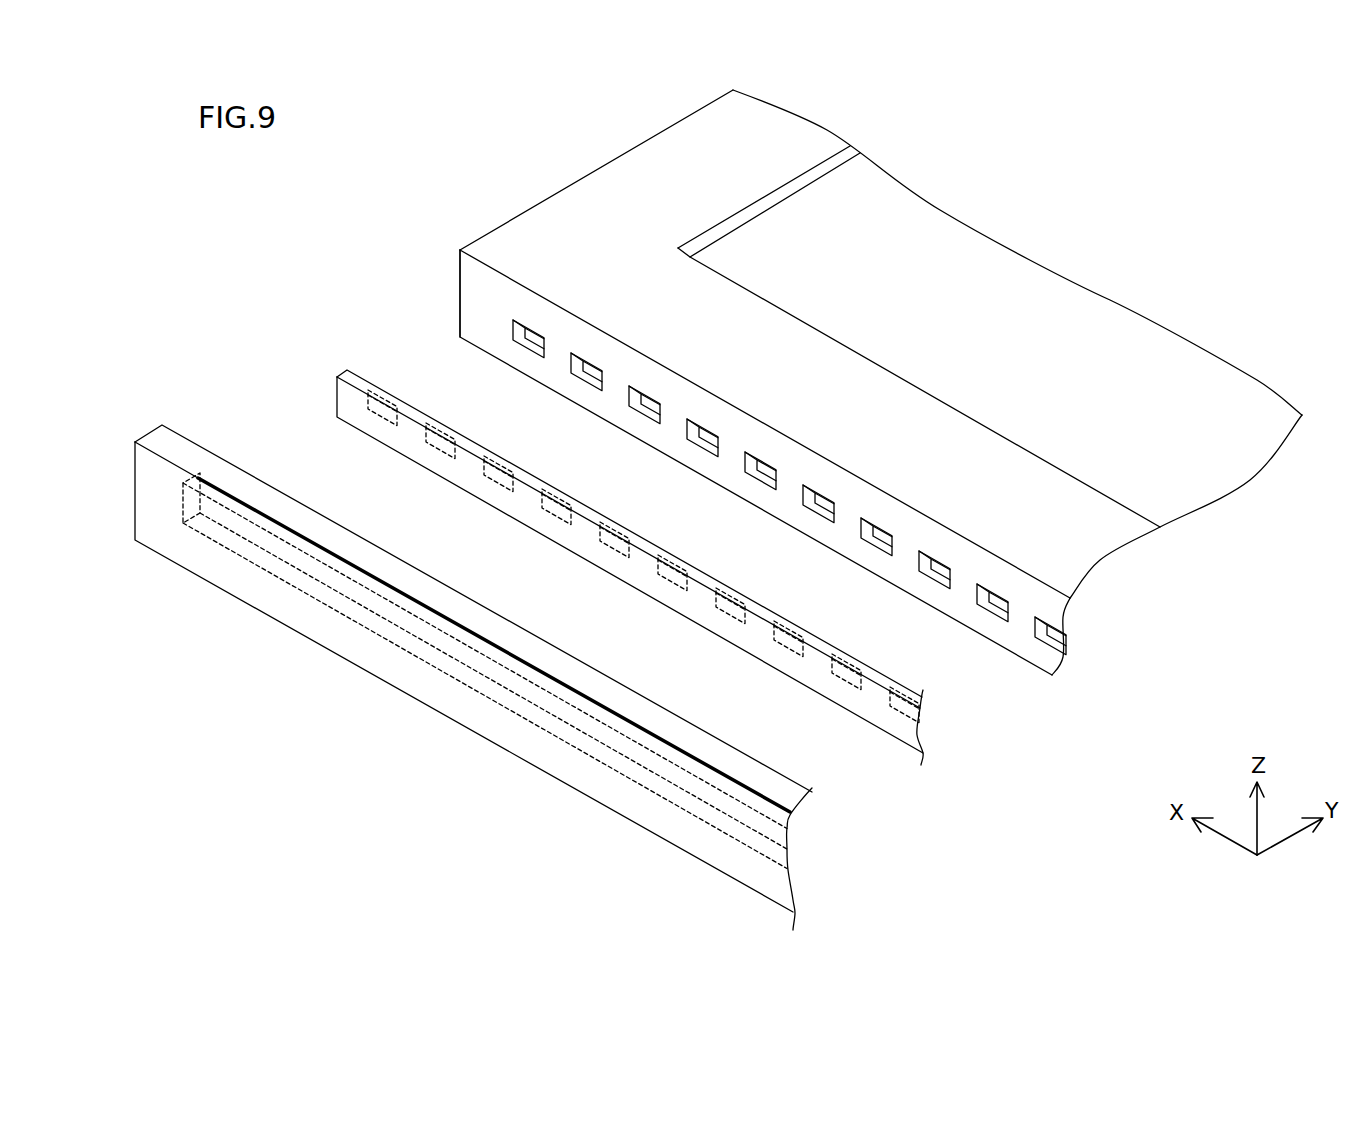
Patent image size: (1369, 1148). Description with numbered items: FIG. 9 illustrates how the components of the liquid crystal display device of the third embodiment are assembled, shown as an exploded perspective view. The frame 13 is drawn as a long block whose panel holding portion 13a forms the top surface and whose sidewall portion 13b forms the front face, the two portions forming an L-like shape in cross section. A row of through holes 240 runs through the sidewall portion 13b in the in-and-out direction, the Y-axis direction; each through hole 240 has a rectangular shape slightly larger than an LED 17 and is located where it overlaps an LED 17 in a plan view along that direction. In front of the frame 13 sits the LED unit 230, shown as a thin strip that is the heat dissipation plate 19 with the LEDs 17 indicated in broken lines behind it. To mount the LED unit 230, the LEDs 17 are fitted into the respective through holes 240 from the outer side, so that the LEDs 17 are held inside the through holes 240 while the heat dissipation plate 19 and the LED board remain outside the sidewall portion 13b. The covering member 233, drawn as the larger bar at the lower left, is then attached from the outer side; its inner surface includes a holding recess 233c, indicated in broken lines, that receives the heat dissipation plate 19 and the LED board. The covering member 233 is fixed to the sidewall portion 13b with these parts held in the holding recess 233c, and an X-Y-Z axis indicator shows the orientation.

The frame 13 is at (667, 128).
The panel holding portion 13a is at (718, 313).
The sidewall portion 13b is at (468, 280).
The through holes 240 is at (747, 480).
The LEDs 17 is at (502, 453).
The heat dissipation plate 19 is at (350, 402).
The LED unit 230 is at (540, 536).
The covering member 233 is at (441, 677).
The holding recess 233c is at (213, 543).